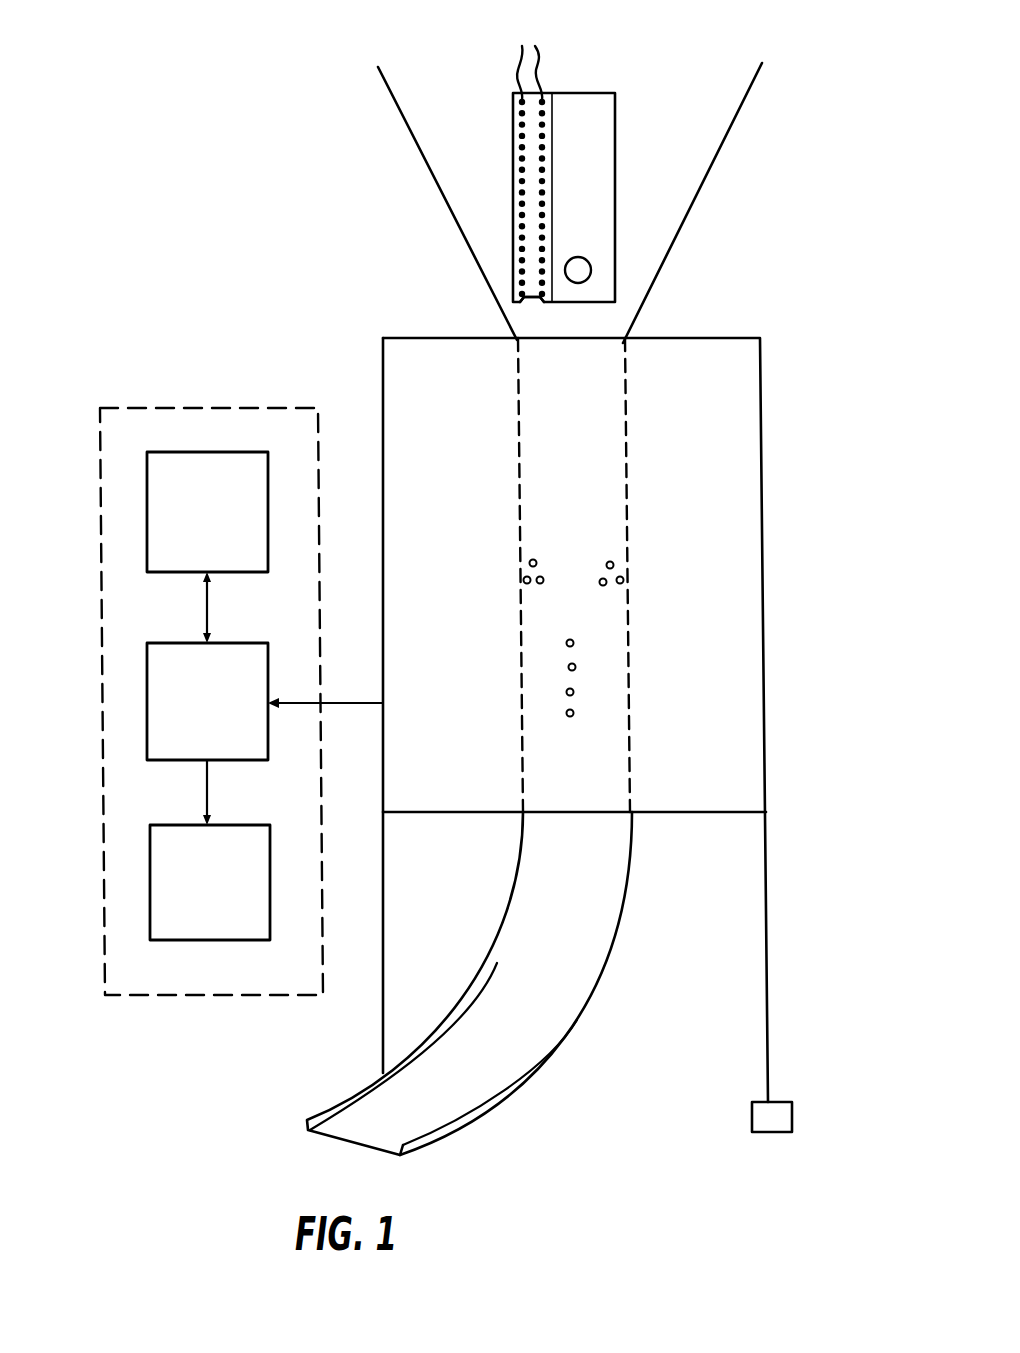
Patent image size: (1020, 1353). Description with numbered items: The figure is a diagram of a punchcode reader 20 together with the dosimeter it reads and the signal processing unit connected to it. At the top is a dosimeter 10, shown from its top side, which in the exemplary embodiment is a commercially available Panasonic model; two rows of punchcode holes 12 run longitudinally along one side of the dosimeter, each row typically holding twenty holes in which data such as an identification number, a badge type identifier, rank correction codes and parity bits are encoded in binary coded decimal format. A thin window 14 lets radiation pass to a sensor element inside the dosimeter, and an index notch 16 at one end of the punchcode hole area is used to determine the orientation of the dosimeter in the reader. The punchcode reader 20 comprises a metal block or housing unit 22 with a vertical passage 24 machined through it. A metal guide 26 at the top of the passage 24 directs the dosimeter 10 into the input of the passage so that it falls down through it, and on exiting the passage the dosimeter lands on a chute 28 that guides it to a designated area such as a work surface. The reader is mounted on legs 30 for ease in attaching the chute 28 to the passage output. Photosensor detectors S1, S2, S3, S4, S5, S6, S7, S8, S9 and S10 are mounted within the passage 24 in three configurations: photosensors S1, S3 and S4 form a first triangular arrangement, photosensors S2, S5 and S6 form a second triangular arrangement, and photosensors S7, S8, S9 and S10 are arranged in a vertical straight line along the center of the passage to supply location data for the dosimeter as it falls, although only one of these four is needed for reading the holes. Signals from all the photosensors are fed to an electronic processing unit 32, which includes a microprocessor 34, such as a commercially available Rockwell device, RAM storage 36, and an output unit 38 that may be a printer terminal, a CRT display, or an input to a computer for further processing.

The dosimeter 10 is at (593, 157).
The punchcode holes 12 is at (537, 59).
The thin window 14 is at (591, 271).
The index notch 16 is at (526, 309).
The punchcode reader 20 is at (583, 735).
The housing unit 22 is at (692, 468).
The vertical passage 24 is at (582, 403).
The metal guide 26 is at (470, 160).
The chute 28 is at (537, 1000).
The legs 30 is at (383, 1018).
The electronic processing unit 32 is at (98, 538).
The microprocessor 34 is at (172, 675).
The RAM storage 36 is at (200, 450).
The output unit 38 is at (172, 855).
The photosensor S1 is at (530, 560).
The photosensor S2 is at (611, 561).
The photosensor S3 is at (524, 578).
The photosensor S4 is at (538, 583).
The photosensor S5 is at (603, 586).
The photosensor S6 is at (623, 579).
The photosensor S7 is at (574, 643).
The photosensor S8 is at (576, 667).
The photosensor S9 is at (566, 692).
The photosensor S10 is at (566, 713).